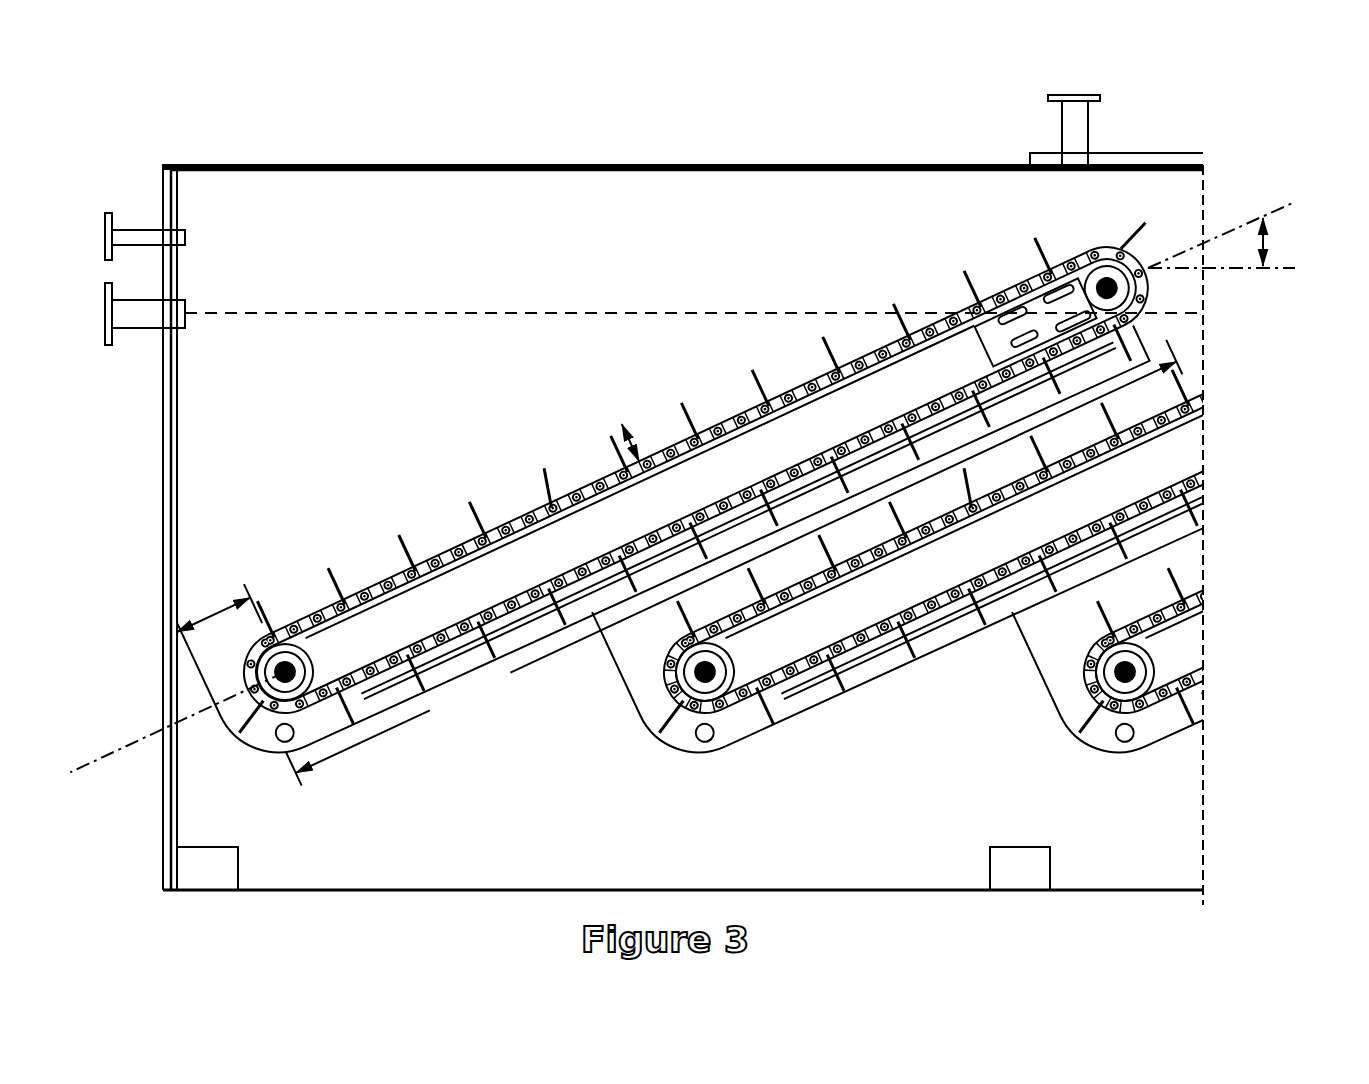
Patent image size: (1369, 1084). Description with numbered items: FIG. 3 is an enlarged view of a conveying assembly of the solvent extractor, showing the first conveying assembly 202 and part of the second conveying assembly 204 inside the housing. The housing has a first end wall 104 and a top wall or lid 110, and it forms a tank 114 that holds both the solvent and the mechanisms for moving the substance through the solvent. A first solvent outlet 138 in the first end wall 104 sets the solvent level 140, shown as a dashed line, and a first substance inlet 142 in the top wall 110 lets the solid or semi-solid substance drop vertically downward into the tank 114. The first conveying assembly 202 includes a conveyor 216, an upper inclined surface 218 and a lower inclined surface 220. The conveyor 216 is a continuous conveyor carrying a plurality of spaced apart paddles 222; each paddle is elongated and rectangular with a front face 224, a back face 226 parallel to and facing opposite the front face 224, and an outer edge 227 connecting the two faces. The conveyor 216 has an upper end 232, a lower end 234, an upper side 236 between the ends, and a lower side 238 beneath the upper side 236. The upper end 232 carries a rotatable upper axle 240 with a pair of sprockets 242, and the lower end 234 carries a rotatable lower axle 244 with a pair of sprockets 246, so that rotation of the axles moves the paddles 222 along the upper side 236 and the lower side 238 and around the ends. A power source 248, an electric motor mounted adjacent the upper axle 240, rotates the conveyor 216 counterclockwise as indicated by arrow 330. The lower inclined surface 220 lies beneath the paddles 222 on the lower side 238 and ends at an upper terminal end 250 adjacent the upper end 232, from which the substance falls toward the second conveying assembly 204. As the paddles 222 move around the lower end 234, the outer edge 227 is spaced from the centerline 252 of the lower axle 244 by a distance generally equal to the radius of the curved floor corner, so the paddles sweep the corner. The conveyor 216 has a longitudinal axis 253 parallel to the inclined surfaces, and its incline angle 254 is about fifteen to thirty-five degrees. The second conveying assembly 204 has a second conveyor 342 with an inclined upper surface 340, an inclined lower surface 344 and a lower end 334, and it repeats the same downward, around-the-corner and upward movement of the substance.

The first end wall 104 is at (163, 480).
The top wall 110 is at (362, 165).
The tank 114 is at (300, 421).
The first solvent outlet 138 is at (104, 325).
The solvent level 140 is at (540, 312).
The first substance inlet 142 is at (1088, 128).
The first conveying assembly 202 is at (684, 499).
The second conveying assembly 204 is at (980, 494).
The conveyor 216 is at (770, 465).
The upper inclined surface 218 is at (690, 428).
The lower inclined surface 220 is at (752, 528).
The paddles 222 is at (670, 432).
The front face 224 is at (516, 450).
The back face 226 is at (531, 443).
The outer edge 227 is at (546, 476).
The upper end 232 is at (1119, 232).
The lower end 234 is at (710, 504).
The upper side 236 is at (323, 570).
The lower side 238 is at (372, 754).
The upper axle 240 is at (1193, 256).
The sprockets 242 is at (1135, 290).
The lower axle 244 is at (189, 681).
The sprockets 246 is at (262, 695).
The power source 248 is at (1030, 285).
The upper terminal end 250 is at (1195, 370).
The centerline 252 is at (300, 657).
The longitudinal axis 253 is at (121, 750).
The incline angle 254 is at (1272, 243).
The arrow 330 is at (104, 236).
The lower end 334 is at (980, 531).
The inclined upper surface 340 is at (1185, 432).
The second conveyor 342 is at (1190, 512).
The inclined lower surface 344 is at (1185, 548).